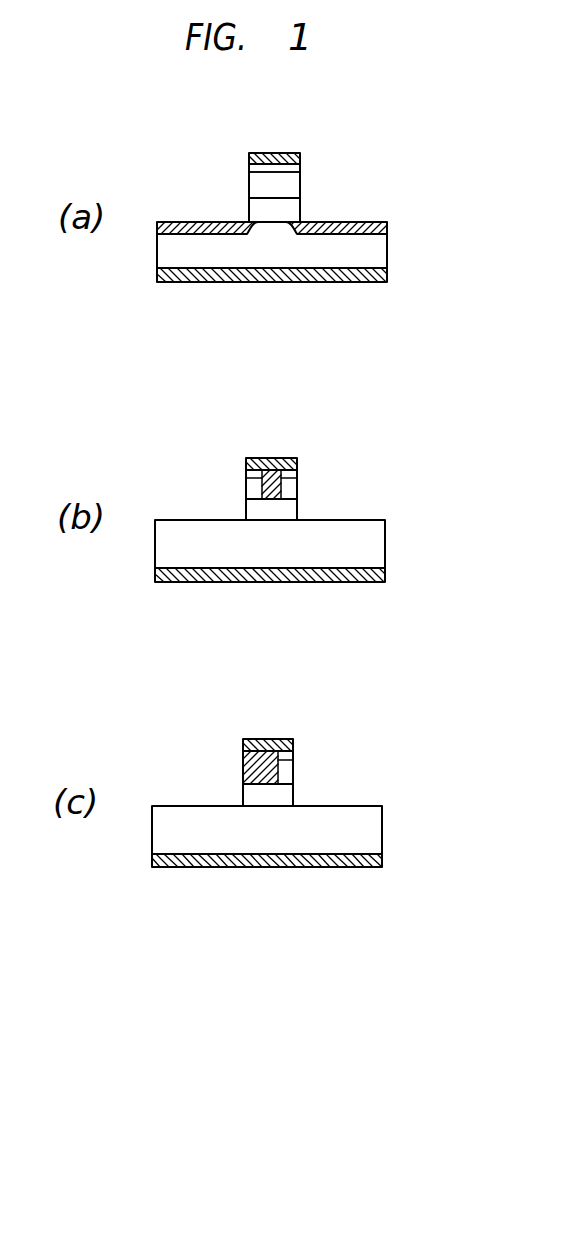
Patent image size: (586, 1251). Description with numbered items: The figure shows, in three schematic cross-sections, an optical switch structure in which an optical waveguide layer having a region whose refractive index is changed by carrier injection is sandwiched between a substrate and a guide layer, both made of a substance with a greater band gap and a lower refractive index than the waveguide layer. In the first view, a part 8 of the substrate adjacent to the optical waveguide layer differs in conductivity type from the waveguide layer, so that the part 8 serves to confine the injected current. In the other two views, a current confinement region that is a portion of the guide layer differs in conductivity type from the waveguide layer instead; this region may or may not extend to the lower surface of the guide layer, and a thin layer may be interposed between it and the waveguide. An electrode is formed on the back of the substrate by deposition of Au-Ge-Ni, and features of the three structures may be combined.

The part of the substrate 8 is at (388, 230).